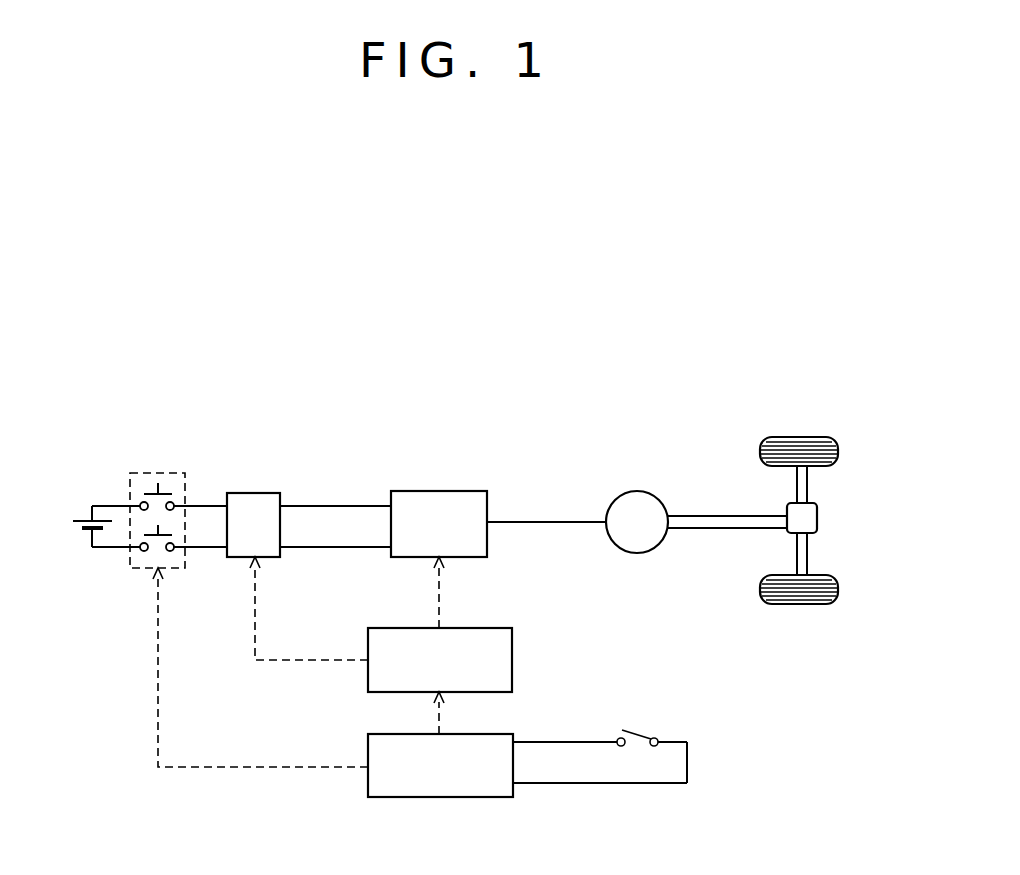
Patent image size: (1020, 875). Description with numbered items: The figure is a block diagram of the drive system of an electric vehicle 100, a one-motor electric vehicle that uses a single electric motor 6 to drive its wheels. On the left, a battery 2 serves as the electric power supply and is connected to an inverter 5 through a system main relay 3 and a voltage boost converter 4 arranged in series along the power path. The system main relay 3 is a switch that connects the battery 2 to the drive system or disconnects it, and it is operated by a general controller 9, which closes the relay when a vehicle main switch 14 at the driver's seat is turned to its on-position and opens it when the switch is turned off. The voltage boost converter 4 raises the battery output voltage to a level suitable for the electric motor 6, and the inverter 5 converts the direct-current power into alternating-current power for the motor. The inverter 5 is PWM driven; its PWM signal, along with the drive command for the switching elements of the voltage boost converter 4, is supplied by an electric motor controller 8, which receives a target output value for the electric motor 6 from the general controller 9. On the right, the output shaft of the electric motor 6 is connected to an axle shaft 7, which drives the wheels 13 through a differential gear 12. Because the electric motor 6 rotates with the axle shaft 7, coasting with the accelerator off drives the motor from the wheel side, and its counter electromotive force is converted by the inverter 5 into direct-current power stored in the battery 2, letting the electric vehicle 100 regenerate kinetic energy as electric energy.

The electric vehicle 100 is at (170, 277).
The battery 2 is at (83, 513).
The system main relay 3 is at (172, 473).
The voltage boost converter 4 is at (265, 493).
The inverter 5 is at (438, 491).
The electric motor 6 is at (635, 491).
The axle shaft 7 is at (712, 529).
The electric motor controller 8 is at (512, 655).
The general controller 9 is at (435, 797).
The differential gear 12 is at (817, 518).
The wheels 13 is at (797, 437).
The vehicle main switch 14 is at (650, 727).